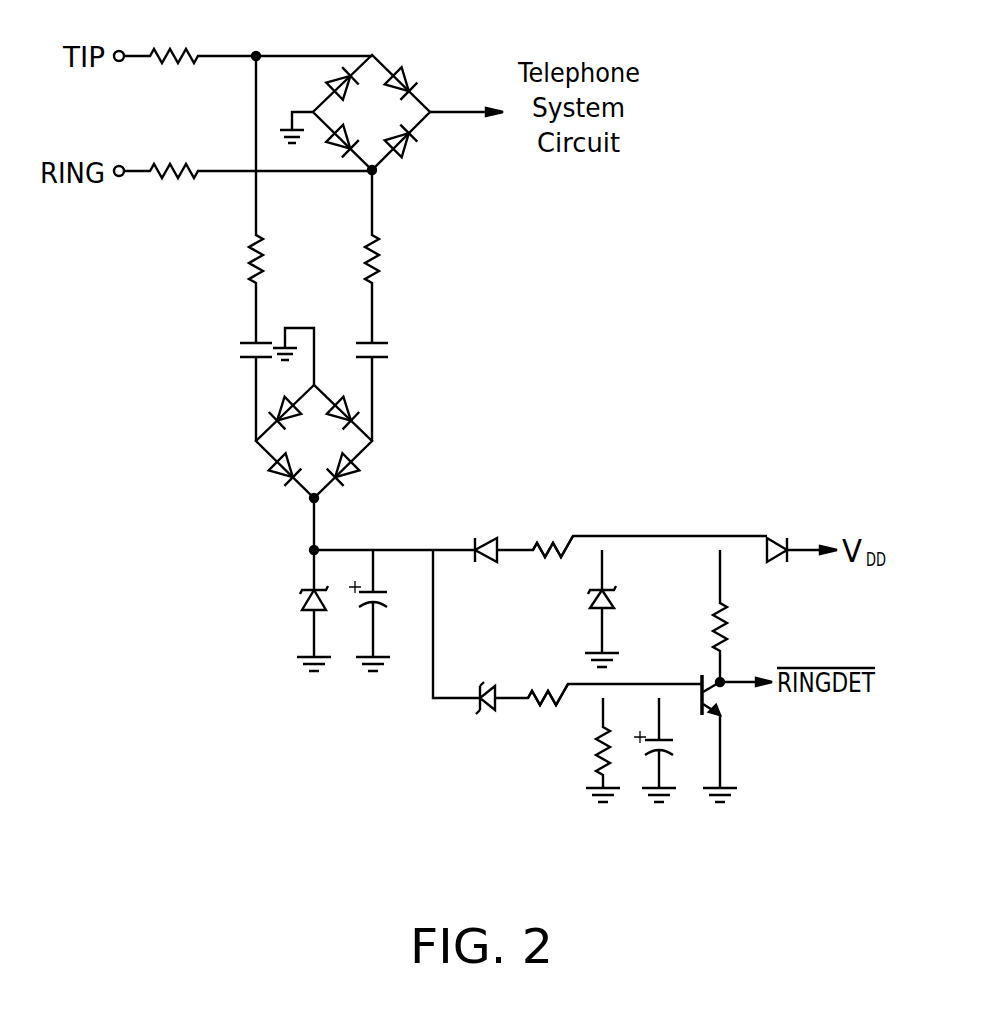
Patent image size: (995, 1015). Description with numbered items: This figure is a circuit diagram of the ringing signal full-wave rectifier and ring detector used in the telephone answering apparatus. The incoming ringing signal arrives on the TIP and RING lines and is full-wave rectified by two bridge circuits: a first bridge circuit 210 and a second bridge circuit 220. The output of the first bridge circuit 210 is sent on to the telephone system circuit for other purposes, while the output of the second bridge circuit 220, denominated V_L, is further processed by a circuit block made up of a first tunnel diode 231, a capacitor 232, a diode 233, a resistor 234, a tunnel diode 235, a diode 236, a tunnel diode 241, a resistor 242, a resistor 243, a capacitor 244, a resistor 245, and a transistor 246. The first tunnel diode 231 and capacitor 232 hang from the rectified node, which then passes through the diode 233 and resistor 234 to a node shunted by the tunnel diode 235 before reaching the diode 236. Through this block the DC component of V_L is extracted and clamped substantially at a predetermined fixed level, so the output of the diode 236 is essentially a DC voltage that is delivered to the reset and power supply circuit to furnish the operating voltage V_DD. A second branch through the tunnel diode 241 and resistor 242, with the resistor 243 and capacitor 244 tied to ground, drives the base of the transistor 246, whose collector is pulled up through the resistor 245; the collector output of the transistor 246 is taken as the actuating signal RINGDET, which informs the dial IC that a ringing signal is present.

The first bridge circuit 210 is at (403, 73).
The second bridge circuit 220 is at (374, 434).
The first tunnel diode 231 is at (300, 596).
The capacitor 232 is at (365, 600).
The diode 233 is at (484, 540).
The resistor 234 is at (552, 540).
The tunnel diode 235 is at (612, 596).
The diode 236 is at (772, 538).
The tunnel diode 241 is at (482, 712).
The resistor 242 is at (546, 712).
The resistor 243 is at (592, 752).
The capacitor 244 is at (651, 752).
The resistor 245 is at (727, 628).
The transistor 246 is at (710, 716).